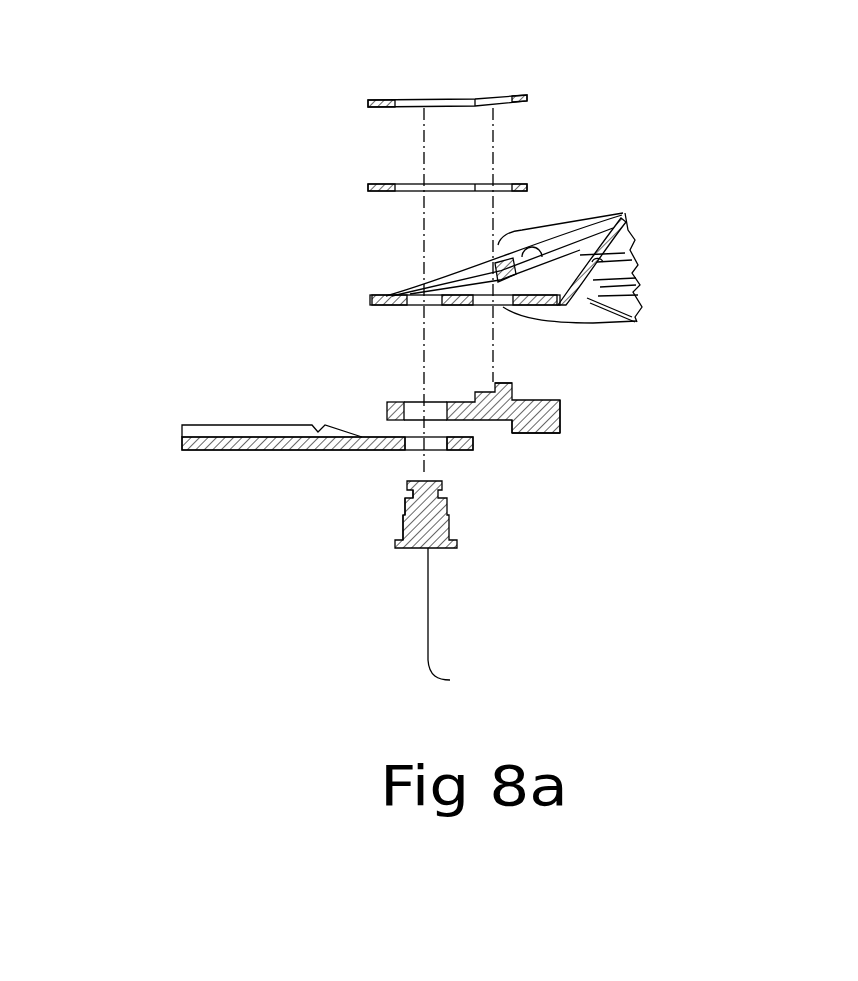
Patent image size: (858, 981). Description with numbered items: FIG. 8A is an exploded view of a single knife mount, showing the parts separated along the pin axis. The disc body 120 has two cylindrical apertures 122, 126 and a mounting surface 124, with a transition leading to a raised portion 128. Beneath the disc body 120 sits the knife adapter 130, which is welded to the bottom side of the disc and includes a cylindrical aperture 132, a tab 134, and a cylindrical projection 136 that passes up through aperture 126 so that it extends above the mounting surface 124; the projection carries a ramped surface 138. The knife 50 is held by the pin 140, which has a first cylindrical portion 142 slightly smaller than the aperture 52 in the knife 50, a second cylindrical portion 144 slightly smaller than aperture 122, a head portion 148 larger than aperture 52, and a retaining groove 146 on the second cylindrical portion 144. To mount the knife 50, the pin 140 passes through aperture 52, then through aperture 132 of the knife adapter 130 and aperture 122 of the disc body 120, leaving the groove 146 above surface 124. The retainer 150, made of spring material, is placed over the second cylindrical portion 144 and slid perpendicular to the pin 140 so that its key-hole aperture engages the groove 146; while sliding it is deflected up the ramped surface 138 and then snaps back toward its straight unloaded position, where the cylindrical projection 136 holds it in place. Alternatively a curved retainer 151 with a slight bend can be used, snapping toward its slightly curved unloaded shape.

The knife 50 is at (213, 432).
The aperture 52 is at (447, 440).
The disc body 120 is at (442, 245).
The cylindrical aperture 122 is at (405, 305).
The mounting surface 124 is at (384, 294).
The cylindrical aperture 126 is at (637, 321).
The raised portion 128 is at (560, 230).
The knife adapter 130 is at (520, 434).
The cylindrical aperture 132 is at (440, 406).
The tab 134 is at (555, 433).
The cylindrical projection 136 is at (560, 428).
The ramped surface 138 is at (510, 380).
The pin 140 is at (344, 611).
The first cylindrical portion 142 is at (405, 522).
The second cylindrical portion 144 is at (403, 518).
The retaining groove 146 is at (407, 493).
The head portion 148 is at (414, 548).
The retainer 150 is at (367, 188).
The curved retainer 151 is at (367, 103).